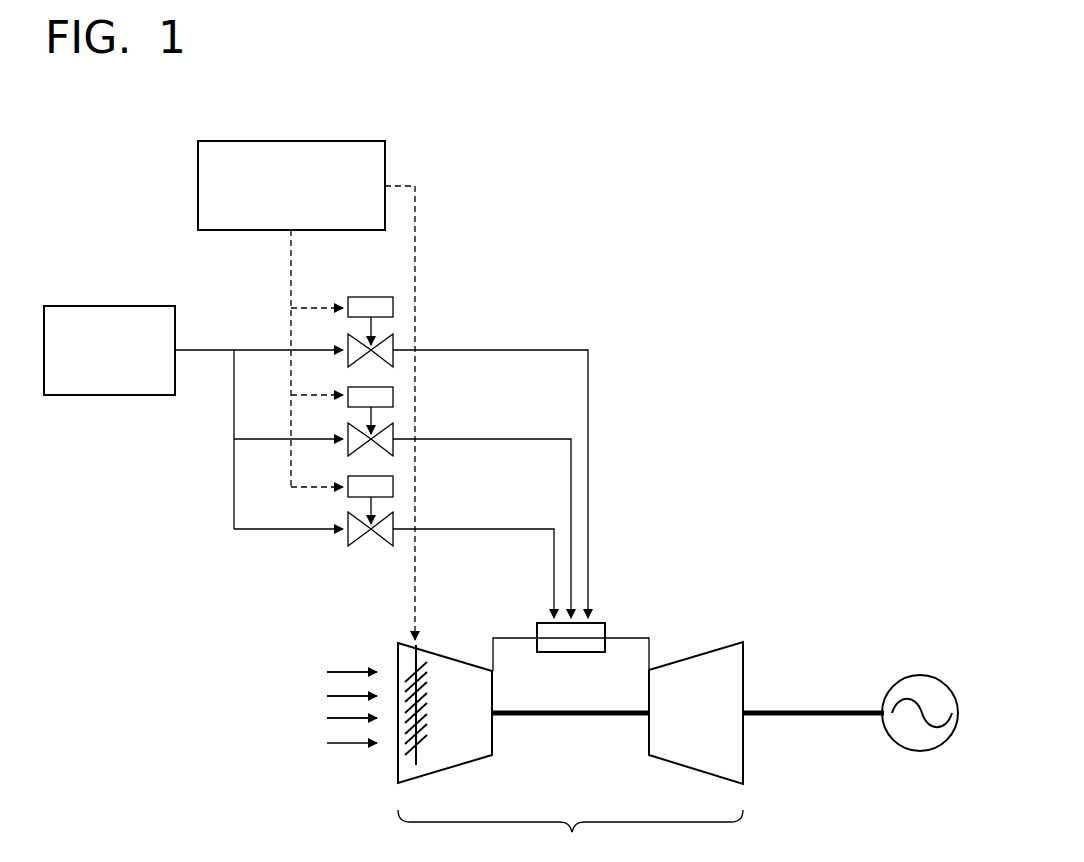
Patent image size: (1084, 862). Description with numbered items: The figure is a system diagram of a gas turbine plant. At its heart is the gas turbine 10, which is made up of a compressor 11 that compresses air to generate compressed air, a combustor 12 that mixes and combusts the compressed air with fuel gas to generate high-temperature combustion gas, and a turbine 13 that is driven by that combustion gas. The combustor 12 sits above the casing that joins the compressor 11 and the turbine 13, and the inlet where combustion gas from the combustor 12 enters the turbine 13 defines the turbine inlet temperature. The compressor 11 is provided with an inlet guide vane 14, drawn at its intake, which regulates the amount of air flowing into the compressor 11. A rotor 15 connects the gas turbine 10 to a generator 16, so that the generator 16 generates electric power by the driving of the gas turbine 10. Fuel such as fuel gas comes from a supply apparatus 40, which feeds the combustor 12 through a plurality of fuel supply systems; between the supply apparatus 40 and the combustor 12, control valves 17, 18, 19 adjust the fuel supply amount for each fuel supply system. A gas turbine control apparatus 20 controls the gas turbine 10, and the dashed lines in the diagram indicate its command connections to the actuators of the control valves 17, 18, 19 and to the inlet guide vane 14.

The gas turbine 10 is at (570, 836).
The compressor 11 is at (470, 767).
The combustor 12 is at (601, 623).
The turbine 13 is at (670, 765).
The inlet guide vane 14 is at (409, 680).
The rotor 15 is at (562, 713).
The generator 16 is at (926, 677).
The control valve 17 is at (356, 297).
The control valve 18 is at (356, 387).
The control valve 19 is at (356, 476).
The gas turbine control apparatus 20 is at (297, 141).
The supply apparatus 40 is at (115, 306).